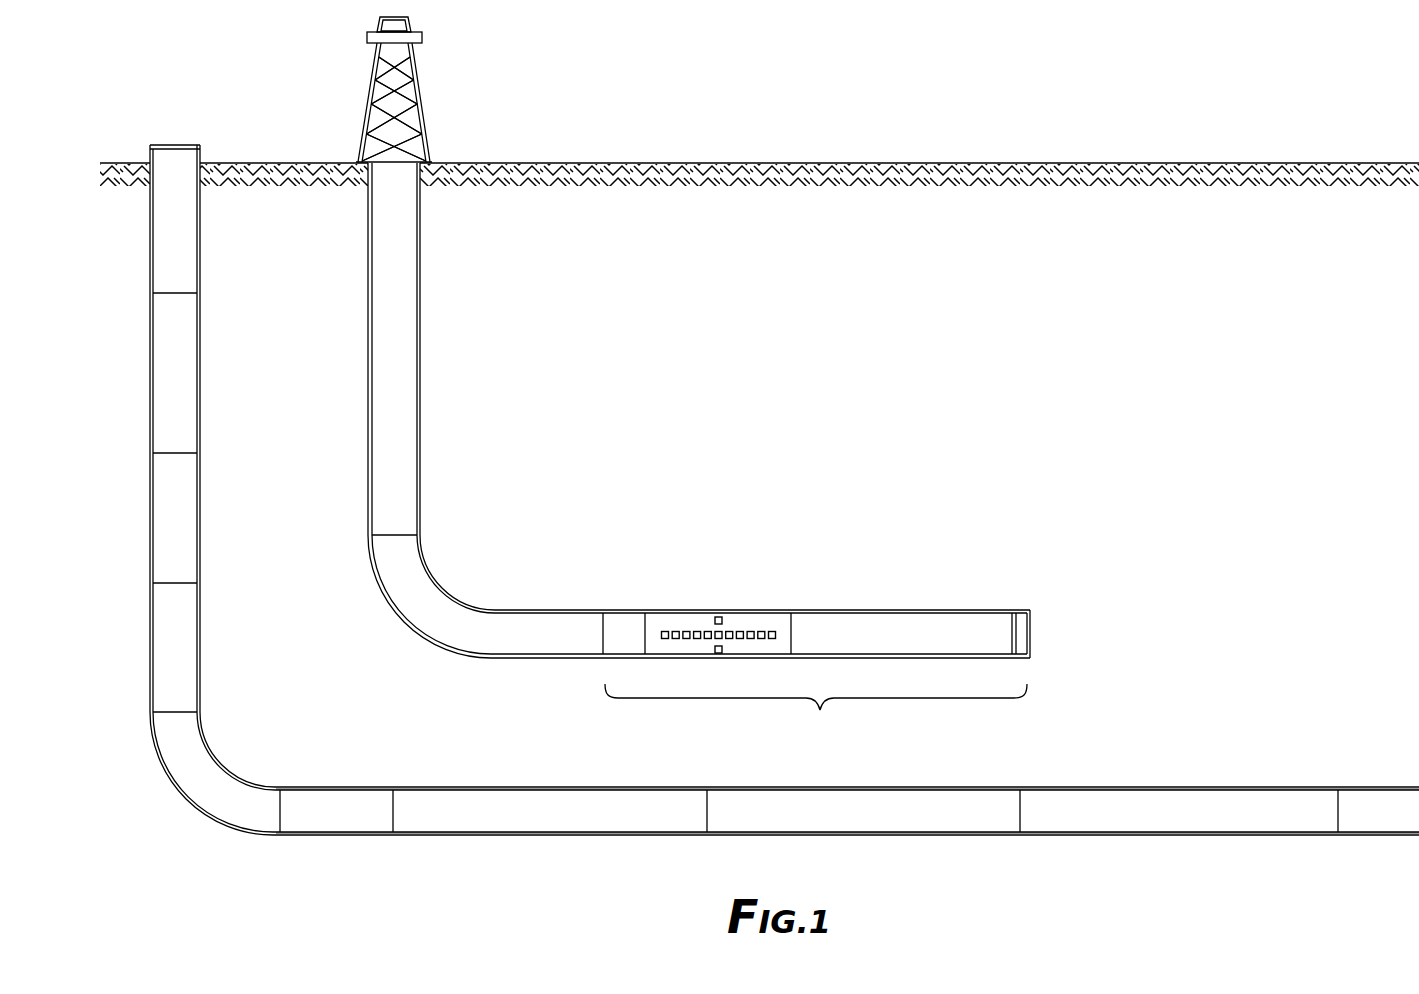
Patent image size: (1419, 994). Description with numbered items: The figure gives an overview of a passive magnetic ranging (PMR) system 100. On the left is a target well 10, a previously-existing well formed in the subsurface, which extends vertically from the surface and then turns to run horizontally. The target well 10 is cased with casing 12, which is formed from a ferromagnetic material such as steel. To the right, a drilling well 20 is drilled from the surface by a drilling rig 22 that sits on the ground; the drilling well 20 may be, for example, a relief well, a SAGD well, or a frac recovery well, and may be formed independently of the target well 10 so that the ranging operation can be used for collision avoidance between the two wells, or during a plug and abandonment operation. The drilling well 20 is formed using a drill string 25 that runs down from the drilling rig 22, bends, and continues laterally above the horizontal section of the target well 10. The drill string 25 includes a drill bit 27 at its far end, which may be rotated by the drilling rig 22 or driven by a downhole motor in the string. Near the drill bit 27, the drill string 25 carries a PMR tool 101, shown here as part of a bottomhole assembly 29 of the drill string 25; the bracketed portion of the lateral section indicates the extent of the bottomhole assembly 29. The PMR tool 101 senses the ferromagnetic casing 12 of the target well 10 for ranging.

The target well 10 is at (363, 786).
The casing 12 is at (451, 826).
The drilling well 20 is at (420, 472).
The drilling rig 22 is at (428, 130).
The drill string 25 is at (420, 425).
The drill bit 27 is at (1020, 616).
The bottomhole assembly 29 is at (820, 710).
The PMR system 100 is at (1069, 442).
The PMR tool 101 is at (778, 607).